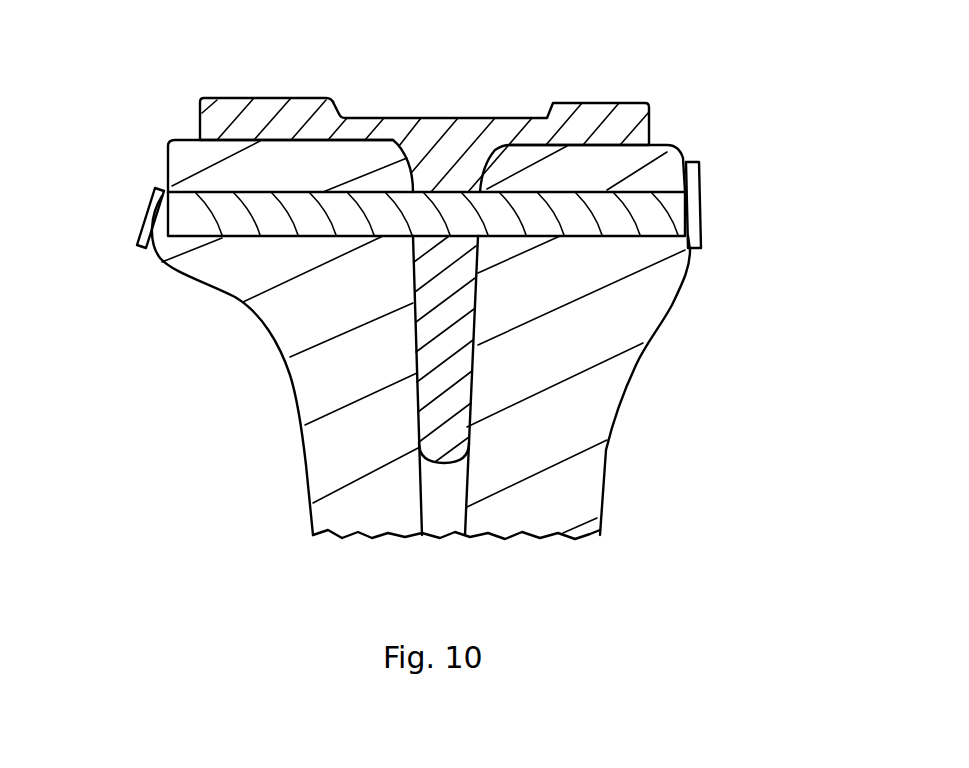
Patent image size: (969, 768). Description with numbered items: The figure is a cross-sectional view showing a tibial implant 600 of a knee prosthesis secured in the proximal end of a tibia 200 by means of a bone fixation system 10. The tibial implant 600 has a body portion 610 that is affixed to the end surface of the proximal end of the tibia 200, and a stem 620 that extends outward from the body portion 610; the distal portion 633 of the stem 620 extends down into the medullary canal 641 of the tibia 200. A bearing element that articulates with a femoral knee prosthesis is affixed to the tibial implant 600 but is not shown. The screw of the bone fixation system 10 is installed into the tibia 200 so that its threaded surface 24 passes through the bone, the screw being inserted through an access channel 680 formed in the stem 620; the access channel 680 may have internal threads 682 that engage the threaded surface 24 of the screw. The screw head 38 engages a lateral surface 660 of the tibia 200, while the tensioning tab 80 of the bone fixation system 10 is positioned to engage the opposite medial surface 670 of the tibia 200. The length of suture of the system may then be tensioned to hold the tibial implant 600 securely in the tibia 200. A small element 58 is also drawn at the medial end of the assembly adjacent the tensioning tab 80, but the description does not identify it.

The bone fixation system 10 is at (426, 272).
The threaded surface 24 is at (484, 232).
The screw head 38 is at (701, 166).
The seal 58 is at (145, 218).
The tensioning tab 80 is at (162, 192).
The tibia 200 is at (658, 328).
The tibial implant 600 is at (410, 170).
The body portion 610 is at (595, 117).
The stem 620 is at (400, 358).
The distal portion 633 is at (460, 398).
The medullary canal 641 is at (468, 454).
The lateral surface 660 is at (692, 271).
The medial surface 670 is at (168, 238).
The access channel 680 is at (403, 242).
The internal threads 682 is at (511, 195).